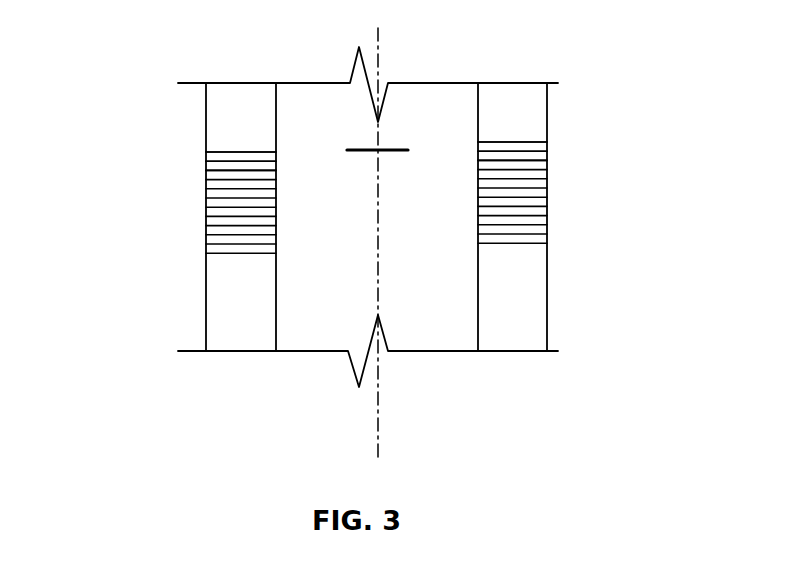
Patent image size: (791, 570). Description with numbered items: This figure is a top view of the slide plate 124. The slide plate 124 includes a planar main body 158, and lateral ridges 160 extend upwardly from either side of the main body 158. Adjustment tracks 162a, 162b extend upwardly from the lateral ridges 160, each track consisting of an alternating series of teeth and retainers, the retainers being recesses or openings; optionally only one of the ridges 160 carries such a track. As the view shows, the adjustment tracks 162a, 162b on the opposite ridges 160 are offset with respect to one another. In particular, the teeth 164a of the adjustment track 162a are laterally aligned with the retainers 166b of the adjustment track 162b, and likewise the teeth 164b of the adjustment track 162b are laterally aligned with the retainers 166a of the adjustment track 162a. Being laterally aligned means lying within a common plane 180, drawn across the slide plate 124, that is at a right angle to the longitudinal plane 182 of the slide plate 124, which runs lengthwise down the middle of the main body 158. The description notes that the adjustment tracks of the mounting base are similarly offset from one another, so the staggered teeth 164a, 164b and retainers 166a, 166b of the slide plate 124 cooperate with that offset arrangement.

The slide plate 124 is at (190, 242).
The planar main body 158 is at (378, 63).
The lateral ridges 160 is at (247, 95).
The adjustment track 162a is at (198, 205).
The adjustment track 162b is at (618, 207).
The teeth 164a is at (222, 147).
The teeth 164b is at (536, 145).
The retainers 166a is at (270, 155).
The retainers 166b is at (547, 153).
The common plane 180 is at (393, 147).
The longitudinal plane 182 is at (378, 235).